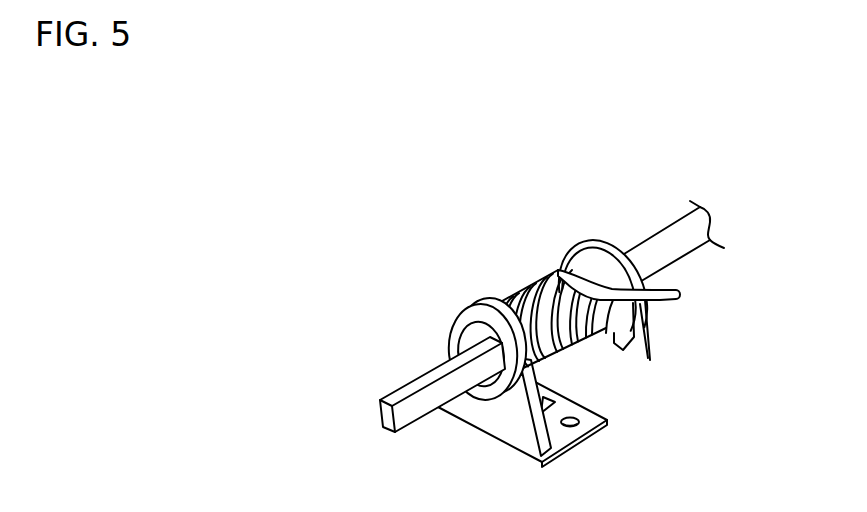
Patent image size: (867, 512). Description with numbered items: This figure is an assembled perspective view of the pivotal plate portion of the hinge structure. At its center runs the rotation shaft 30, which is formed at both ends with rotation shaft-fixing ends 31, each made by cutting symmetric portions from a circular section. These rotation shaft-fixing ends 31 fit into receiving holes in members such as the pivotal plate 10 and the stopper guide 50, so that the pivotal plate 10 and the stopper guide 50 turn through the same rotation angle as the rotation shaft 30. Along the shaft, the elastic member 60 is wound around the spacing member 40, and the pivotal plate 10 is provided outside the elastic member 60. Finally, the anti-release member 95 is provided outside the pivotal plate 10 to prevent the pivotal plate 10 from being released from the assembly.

The pivotal plate 10 is at (482, 307).
The rotation shaft 30 is at (687, 243).
The rotation shaft-fixing end 31 is at (424, 405).
The spacing member 40 is at (633, 337).
The stopper guide 50 is at (598, 243).
The elastic member 60 is at (533, 290).
The anti-release member 95 is at (457, 322).